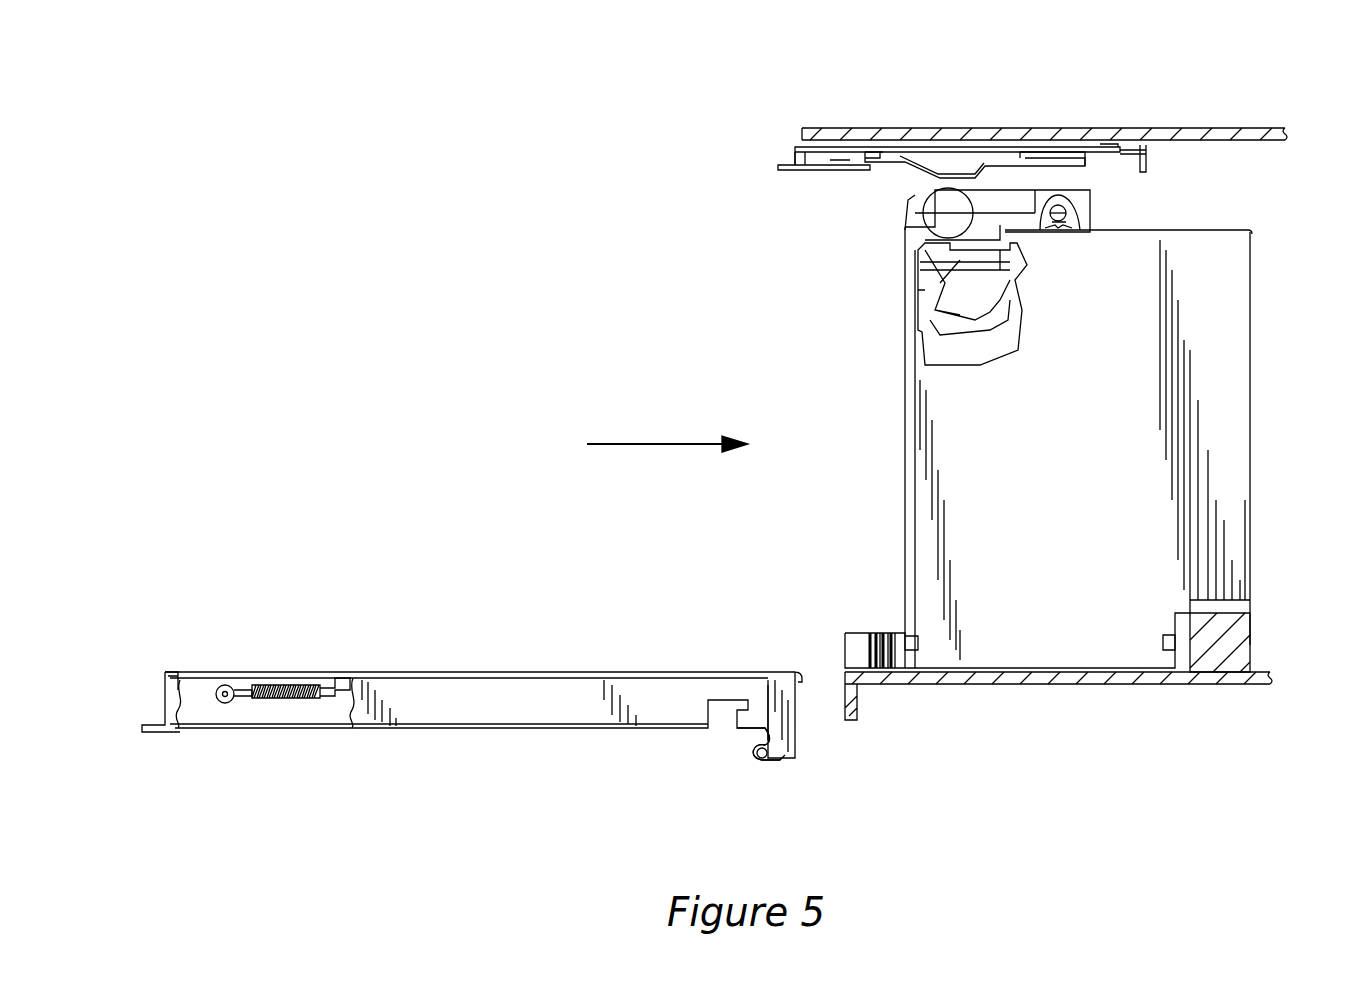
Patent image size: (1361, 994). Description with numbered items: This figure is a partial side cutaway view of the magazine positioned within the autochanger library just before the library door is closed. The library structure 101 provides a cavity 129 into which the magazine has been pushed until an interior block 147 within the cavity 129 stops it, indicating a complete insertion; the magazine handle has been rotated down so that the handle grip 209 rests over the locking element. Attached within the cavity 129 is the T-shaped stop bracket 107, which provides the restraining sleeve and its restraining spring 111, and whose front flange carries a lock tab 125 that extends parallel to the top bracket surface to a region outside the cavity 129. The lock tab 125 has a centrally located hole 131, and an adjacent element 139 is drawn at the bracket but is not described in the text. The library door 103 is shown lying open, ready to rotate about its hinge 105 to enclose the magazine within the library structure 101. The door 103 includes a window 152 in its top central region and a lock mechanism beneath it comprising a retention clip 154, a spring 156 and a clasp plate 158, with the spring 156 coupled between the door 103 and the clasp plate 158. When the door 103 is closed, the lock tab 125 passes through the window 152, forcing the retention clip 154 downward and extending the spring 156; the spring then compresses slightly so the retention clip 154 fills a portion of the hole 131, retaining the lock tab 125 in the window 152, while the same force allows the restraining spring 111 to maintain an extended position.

The autochanger library structure 101 is at (1228, 135).
The library door 103 is at (487, 738).
The hinge 105 is at (768, 758).
The stop bracket 107 is at (905, 142).
The restraining spring 111 is at (885, 165).
The lock tab 125 is at (790, 170).
The cavity 129 is at (1160, 195).
The hole 131 is at (815, 183).
The bracket 139 is at (790, 150).
The interior block 147 is at (1240, 648).
The door window 152 is at (195, 672).
The retention clip 154 is at (226, 690).
The spring 156 is at (290, 688).
The clasp plate 158 is at (338, 685).
The handle grip 209 is at (925, 212).